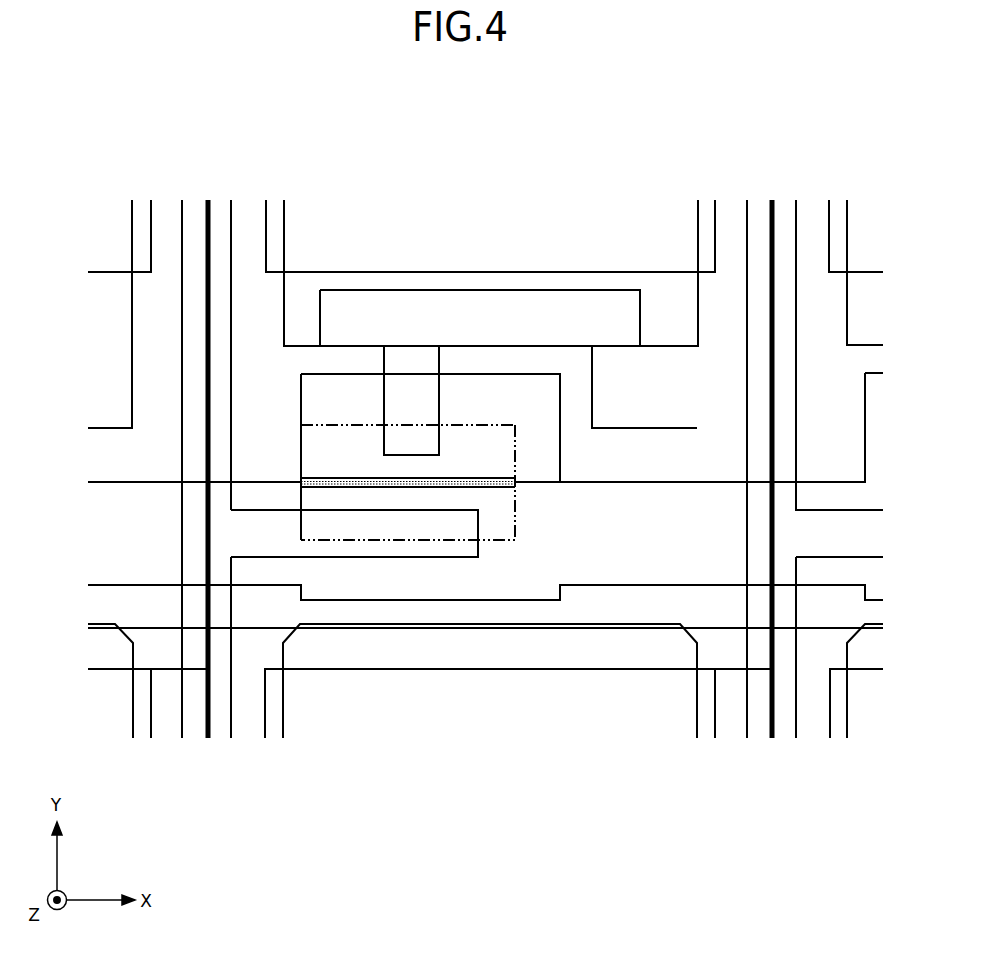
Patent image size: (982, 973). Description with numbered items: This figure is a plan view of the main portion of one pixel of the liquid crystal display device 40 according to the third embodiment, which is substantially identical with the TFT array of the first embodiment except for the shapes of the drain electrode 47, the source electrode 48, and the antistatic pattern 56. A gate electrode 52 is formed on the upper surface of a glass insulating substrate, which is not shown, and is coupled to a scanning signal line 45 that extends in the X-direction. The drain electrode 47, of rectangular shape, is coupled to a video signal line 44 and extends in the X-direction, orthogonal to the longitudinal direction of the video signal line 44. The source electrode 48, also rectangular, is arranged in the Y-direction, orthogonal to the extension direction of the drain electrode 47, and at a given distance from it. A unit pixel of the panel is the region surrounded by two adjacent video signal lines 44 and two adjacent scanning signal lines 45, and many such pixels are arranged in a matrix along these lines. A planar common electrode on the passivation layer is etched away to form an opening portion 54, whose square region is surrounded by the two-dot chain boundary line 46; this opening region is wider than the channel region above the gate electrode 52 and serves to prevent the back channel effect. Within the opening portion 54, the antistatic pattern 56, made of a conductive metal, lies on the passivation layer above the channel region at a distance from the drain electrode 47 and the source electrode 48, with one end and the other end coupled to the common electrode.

The liquid crystal display device 40 is at (591, 152).
The video signal line 44 is at (238, 192).
The scanning signal line 45 is at (80, 480).
The boundary line 46 is at (517, 499).
The drain electrode 47 is at (398, 525).
The source electrode 48 is at (423, 442).
The gate electrode 52 is at (312, 397).
The opening portion 54 is at (500, 450).
The antistatic pattern 56 is at (327, 480).